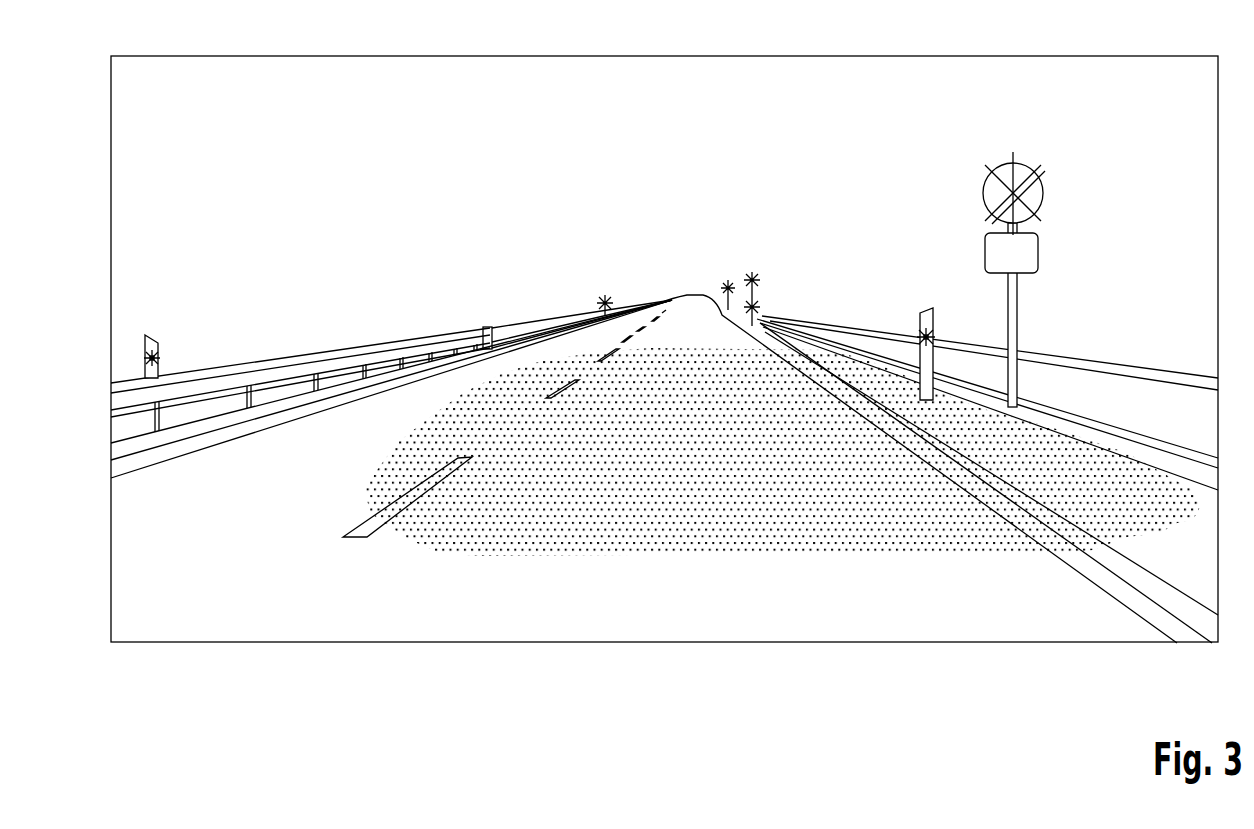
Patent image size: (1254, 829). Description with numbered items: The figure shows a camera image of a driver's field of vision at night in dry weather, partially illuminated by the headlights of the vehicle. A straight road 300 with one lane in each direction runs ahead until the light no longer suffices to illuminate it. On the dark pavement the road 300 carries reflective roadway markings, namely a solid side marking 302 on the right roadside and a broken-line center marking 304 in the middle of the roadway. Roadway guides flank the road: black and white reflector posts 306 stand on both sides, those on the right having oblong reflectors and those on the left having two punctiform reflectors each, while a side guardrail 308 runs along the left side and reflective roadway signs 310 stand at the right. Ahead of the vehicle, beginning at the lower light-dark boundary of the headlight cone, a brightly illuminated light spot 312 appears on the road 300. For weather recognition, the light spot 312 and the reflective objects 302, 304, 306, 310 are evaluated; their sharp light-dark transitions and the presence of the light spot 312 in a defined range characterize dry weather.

The road 300 is at (1000, 618).
The solid side marking 302 is at (1186, 633).
The broken-line center marking 304 is at (367, 537).
The reflector posts 306 is at (143, 345).
The side guardrail 308 is at (262, 372).
The reflective roadway signs 310 is at (750, 275).
The light spot 312 is at (720, 520).